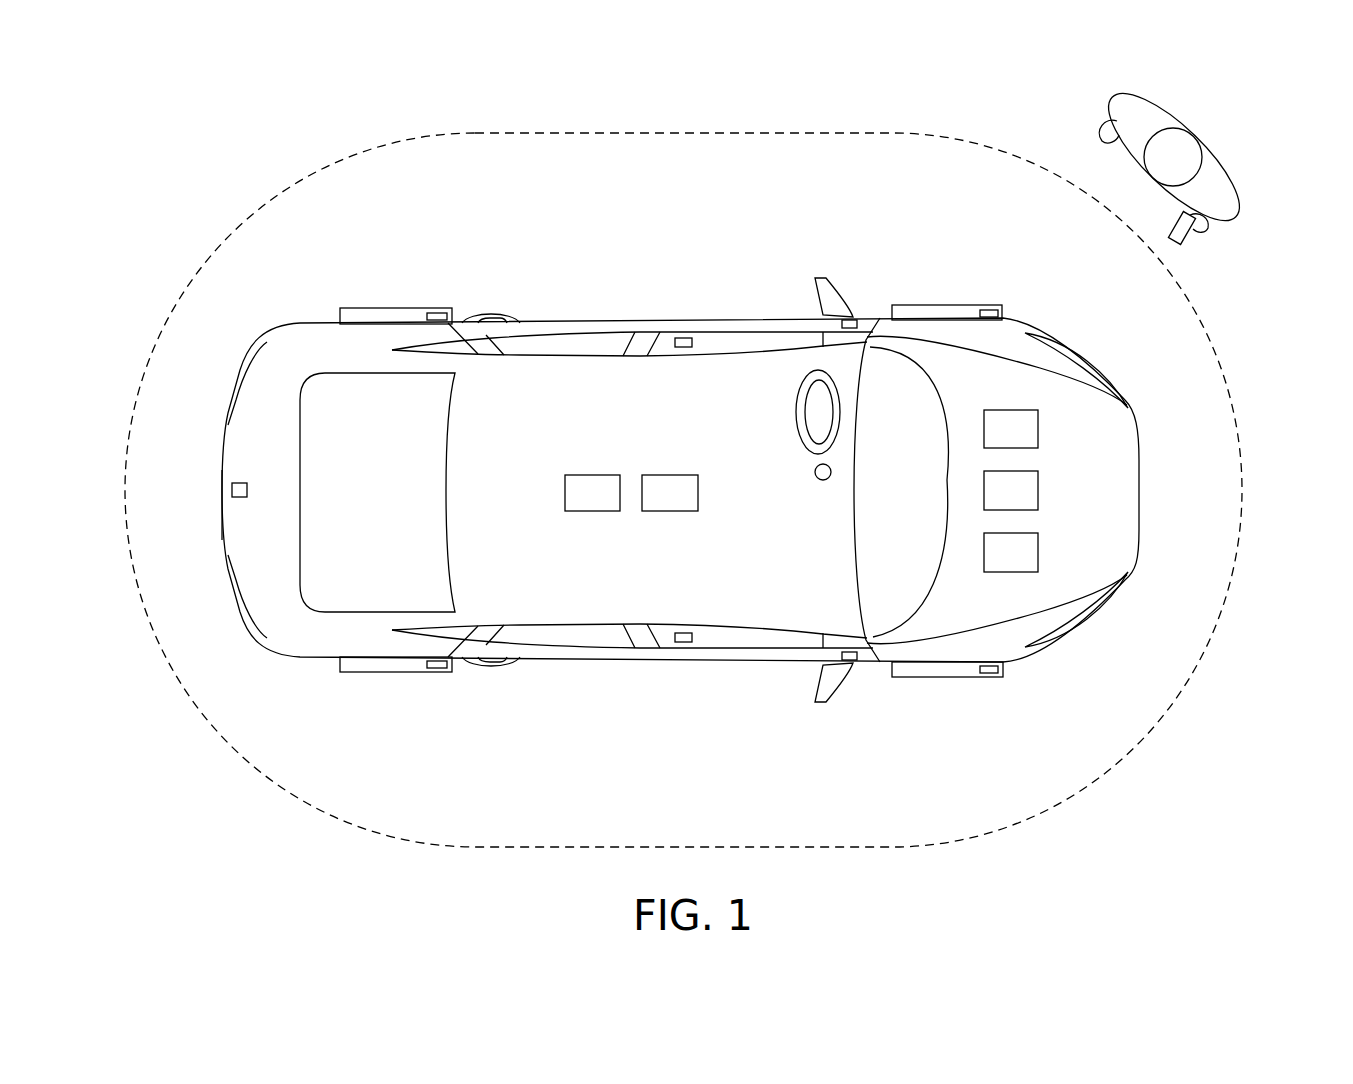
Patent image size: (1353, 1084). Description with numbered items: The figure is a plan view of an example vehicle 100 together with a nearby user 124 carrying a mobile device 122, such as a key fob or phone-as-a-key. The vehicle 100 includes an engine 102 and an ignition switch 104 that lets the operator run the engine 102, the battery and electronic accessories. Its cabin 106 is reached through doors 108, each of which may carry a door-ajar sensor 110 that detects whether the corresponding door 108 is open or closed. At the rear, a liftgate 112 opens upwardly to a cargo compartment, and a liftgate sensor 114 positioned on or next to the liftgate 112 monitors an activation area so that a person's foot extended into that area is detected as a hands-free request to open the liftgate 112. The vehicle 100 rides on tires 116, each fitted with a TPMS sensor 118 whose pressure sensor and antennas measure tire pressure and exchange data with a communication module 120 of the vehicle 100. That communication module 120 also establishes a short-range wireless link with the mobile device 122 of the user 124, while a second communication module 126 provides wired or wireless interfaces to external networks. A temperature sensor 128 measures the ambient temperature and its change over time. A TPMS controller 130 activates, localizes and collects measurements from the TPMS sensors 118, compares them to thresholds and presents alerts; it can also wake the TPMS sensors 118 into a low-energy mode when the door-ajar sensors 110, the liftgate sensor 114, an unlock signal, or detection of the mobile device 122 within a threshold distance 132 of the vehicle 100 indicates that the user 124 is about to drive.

The vehicle 100 is at (1030, 322).
The engine 102 is at (1030, 442).
The ignition switch 104 is at (815, 474).
The cabin 106 is at (649, 575).
The doors 108 is at (755, 345).
The door-ajar sensors 110 is at (685, 338).
The liftgate 112 is at (240, 518).
The liftgate sensor 114 is at (232, 490).
The tires 116 is at (396, 308).
The TPMS sensors 118 is at (437, 313).
The communication module 120 is at (611, 503).
The mobile device 122 is at (1205, 232).
The user 124 is at (1158, 126).
The communication module 126 is at (689, 503).
The temperature sensor 128 is at (1030, 503).
The TPMS controller 130 is at (1030, 565).
The threshold distance 132 is at (856, 133).